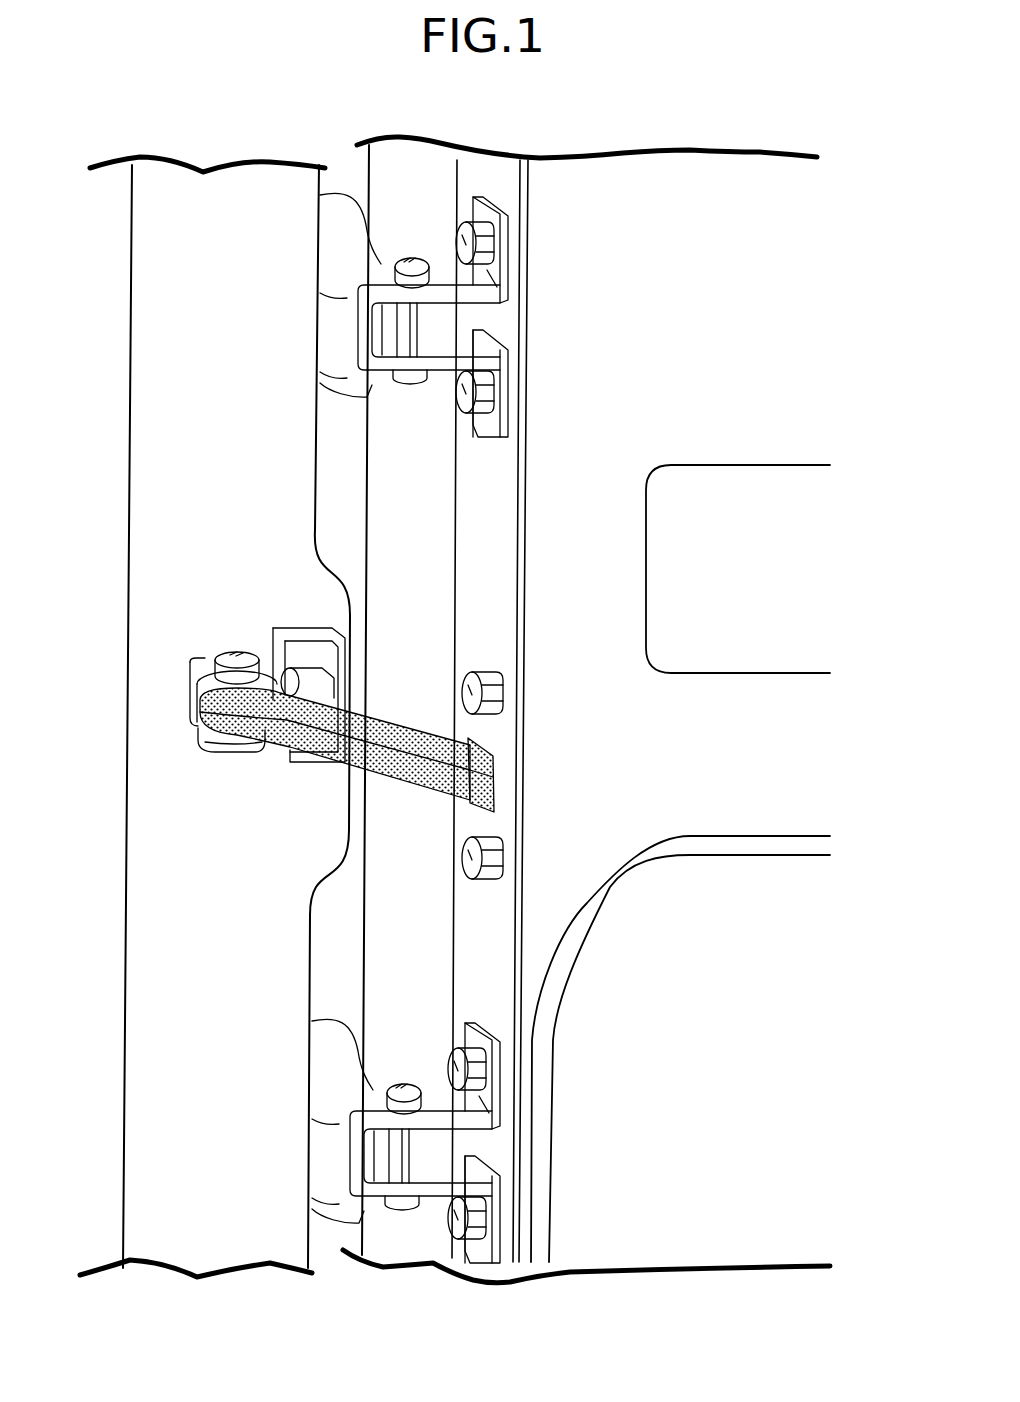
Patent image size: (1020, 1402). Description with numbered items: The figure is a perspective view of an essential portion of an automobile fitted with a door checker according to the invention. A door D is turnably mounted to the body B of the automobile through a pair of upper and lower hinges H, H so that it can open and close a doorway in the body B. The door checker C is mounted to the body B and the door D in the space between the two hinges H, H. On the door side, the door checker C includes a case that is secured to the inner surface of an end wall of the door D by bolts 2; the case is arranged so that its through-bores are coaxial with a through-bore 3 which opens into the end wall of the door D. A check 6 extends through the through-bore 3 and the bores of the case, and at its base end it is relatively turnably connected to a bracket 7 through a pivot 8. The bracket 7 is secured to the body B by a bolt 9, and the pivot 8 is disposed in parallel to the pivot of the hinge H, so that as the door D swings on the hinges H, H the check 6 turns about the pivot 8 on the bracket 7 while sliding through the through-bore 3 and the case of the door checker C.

The body B is at (235, 207).
The door checker C is at (315, 825).
The door D is at (657, 185).
The hinge H is at (413, 243).
The bolt 2 is at (466, 680).
The through-bore 3 is at (493, 777).
The check 6 is at (407, 767).
The bracket 7 is at (233, 753).
The pivot 8 is at (245, 653).
The bolt 9 is at (333, 680).